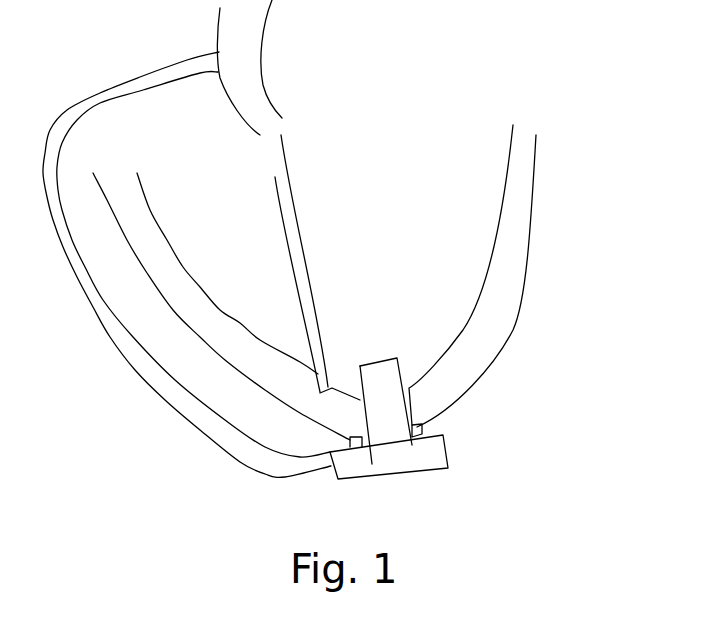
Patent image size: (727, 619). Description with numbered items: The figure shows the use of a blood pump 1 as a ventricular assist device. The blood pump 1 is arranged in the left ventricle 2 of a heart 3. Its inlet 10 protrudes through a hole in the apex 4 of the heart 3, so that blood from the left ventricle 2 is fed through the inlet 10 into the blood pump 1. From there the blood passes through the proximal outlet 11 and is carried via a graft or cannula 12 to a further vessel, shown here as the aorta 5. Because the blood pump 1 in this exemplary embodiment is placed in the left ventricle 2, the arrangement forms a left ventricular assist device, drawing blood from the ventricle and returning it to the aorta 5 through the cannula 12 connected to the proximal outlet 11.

The blood pump 1 is at (409, 404).
The left ventricle 2 is at (331, 267).
The heart 3 is at (545, 202).
The apex 4 is at (410, 372).
The aorta 5 is at (249, 67).
The inlet 10 is at (375, 362).
The proximal outlet 11 is at (330, 480).
The cannula 12 is at (133, 370).